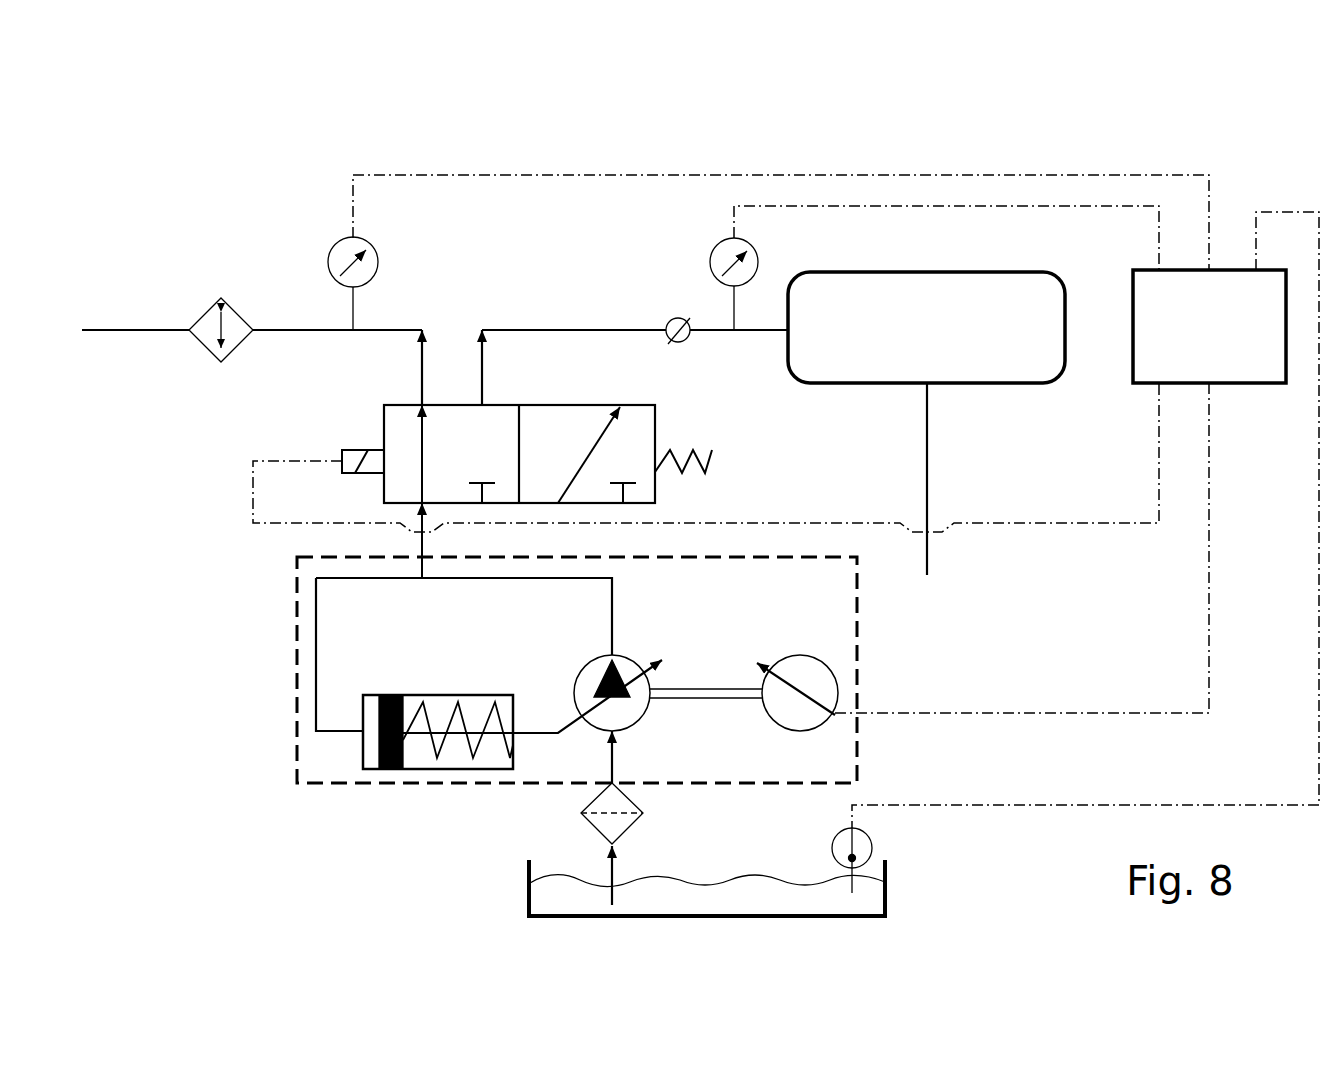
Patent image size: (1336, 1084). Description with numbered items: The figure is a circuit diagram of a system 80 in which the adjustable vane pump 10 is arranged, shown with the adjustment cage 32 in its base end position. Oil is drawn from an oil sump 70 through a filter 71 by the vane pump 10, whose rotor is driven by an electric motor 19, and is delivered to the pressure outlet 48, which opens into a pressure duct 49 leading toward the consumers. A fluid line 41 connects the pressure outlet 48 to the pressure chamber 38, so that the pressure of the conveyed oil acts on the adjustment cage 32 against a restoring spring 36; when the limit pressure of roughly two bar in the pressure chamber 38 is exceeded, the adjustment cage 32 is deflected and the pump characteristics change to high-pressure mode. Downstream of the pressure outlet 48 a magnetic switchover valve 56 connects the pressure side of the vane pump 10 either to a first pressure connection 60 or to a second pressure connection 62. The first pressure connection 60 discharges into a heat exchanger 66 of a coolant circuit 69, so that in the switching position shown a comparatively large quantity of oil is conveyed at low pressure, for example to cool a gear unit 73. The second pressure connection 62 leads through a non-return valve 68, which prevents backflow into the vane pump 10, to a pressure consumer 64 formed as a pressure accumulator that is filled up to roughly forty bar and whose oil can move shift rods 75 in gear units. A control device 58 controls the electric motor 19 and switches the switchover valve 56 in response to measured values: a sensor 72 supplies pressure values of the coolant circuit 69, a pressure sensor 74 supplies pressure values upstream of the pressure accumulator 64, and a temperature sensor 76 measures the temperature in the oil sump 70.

The vane pump 10 is at (625, 667).
The electric motor 19 is at (805, 665).
The adjustment cage 32 is at (390, 695).
The spring 36 is at (463, 712).
The pressure chamber 38 is at (373, 770).
The fluid line 41 is at (314, 680).
The pressure outlet 48 is at (608, 652).
The pressure duct 49 is at (590, 578).
The magnetic switchover valve 56 is at (641, 422).
The control device 58 is at (1194, 338).
The first pressure connection 60 is at (430, 362).
The second pressure connection 62 is at (480, 362).
The pressure consumer 64 is at (910, 338).
The heat exchanger 66 is at (207, 322).
The non-return valve 68 is at (674, 318).
The coolant circuit 69 is at (276, 328).
The oil sump 70 is at (758, 892).
The filter 71 is at (600, 803).
The sensor 72 is at (343, 254).
The gear unit 73 is at (123, 333).
The pressure sensor 74 is at (718, 255).
The shift rods 75 is at (929, 555).
The temperature sensor 76 is at (866, 840).
The system 80 is at (1152, 158).